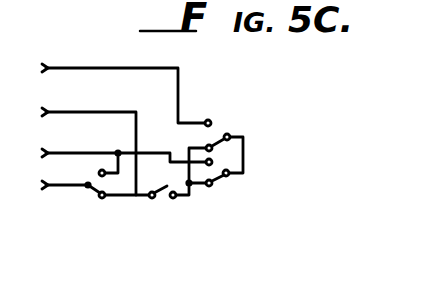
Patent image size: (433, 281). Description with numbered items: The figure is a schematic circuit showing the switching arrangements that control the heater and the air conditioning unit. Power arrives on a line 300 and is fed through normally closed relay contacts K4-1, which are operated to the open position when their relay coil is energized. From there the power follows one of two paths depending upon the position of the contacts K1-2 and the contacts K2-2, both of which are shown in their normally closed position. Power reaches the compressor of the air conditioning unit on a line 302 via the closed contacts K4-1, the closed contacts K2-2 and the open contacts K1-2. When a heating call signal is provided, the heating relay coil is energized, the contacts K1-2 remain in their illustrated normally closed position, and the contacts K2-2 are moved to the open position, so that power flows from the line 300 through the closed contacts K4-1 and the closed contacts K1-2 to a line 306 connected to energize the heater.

The line 306 is at (81, 68).
The line 300 is at (76, 112).
The line 302 is at (68, 153).
The relay contacts K4-1 is at (160, 191).
The relay contacts K2-2 is at (242, 138).
The relay contacts K1-2 is at (222, 179).